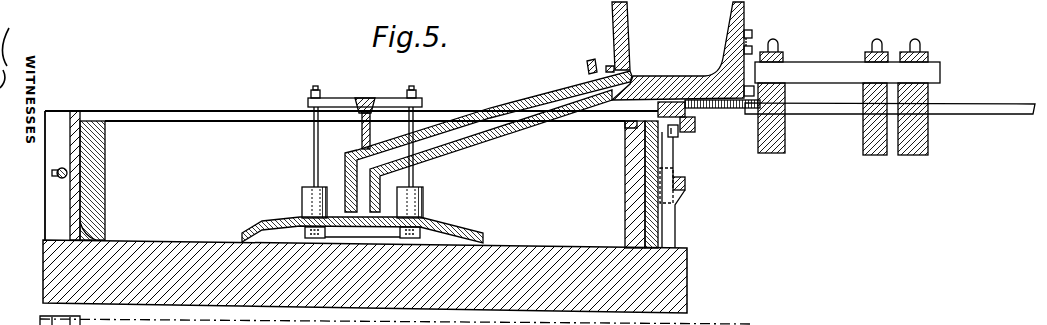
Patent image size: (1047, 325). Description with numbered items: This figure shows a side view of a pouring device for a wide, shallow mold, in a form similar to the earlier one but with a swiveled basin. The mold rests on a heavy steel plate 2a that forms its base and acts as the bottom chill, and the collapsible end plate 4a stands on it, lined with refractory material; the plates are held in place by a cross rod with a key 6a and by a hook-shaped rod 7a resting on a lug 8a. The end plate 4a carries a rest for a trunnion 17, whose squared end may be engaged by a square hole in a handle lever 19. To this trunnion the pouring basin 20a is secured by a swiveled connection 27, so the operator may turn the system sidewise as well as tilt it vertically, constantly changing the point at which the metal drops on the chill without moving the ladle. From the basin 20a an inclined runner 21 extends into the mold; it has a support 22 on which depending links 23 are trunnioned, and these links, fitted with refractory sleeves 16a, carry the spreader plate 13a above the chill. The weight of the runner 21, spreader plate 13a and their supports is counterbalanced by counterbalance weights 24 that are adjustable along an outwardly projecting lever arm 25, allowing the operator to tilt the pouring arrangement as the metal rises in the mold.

The steel plate 2a is at (53, 273).
The end plate 4a is at (70, 203).
The key 6a is at (52, 174).
The hook-shaped rod 7a is at (689, 183).
The lug 8a is at (684, 198).
The spreader plate 13a is at (460, 226).
The refractory sleeve 16a is at (306, 203).
The trunnion 17 is at (689, 113).
The handle lever 19 is at (970, 114).
The pouring basin 20a is at (680, 51).
The inclined runner 21 is at (541, 106).
The support 22 is at (362, 144).
The depending link 23 is at (314, 158).
The counterbalance weight 24 is at (771, 153).
The lever arm 25 is at (836, 60).
The swiveled connection 27 is at (681, 134).